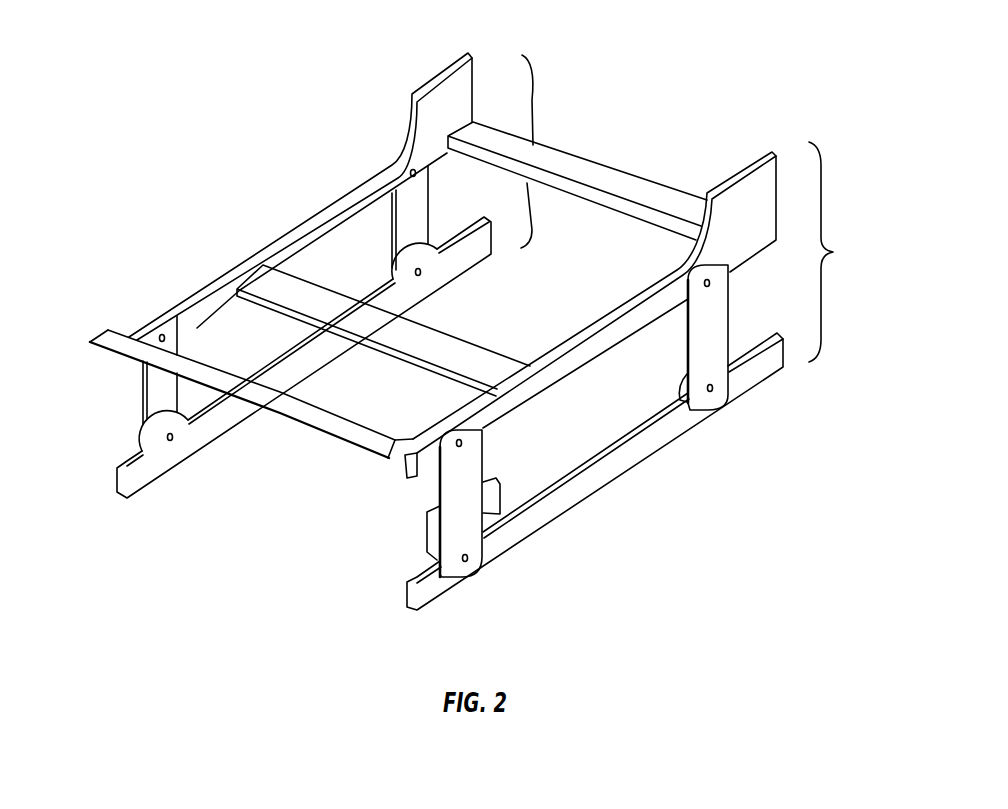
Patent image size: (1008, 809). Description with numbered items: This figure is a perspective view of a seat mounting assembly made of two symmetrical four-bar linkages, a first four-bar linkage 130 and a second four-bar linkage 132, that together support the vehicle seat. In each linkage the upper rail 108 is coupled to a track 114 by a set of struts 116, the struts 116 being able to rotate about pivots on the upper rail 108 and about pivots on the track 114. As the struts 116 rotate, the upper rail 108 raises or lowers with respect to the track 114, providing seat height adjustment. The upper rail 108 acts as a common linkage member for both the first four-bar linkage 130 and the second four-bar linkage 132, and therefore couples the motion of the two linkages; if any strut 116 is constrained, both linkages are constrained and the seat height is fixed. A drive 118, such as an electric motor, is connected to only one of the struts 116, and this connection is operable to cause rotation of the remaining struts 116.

The upper rail 108 is at (646, 190).
The track 114 is at (621, 469).
The struts 116 is at (426, 210).
The drive 118 is at (506, 488).
The first four-bar linkage 130 is at (845, 252).
The second four-bar linkage 132 is at (534, 100).